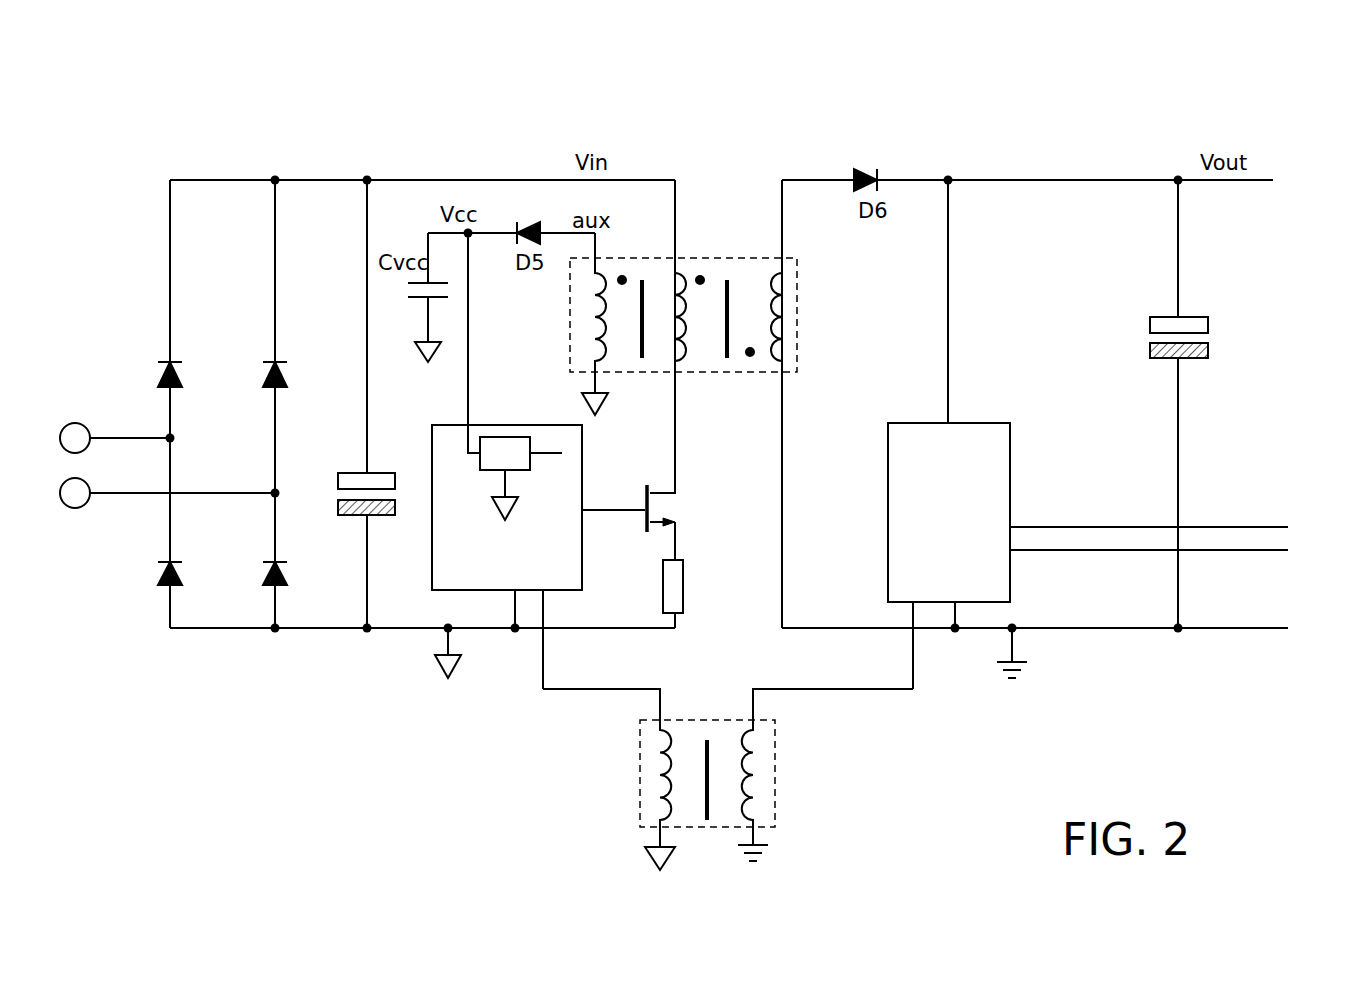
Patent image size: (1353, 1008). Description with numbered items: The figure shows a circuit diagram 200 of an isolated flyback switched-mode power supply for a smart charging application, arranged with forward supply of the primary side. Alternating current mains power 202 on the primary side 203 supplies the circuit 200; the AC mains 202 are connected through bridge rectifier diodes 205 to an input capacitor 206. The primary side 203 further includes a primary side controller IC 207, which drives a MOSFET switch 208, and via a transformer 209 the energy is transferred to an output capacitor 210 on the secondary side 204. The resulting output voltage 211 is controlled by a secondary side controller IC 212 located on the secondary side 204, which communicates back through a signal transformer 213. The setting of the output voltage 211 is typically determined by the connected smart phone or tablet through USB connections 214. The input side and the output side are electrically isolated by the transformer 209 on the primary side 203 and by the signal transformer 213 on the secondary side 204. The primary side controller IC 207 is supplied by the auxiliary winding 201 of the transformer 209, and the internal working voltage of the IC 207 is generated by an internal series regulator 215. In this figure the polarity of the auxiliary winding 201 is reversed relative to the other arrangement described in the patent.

The circuit diagram 200 is at (1310, 131).
The auxiliary winding 201 is at (686, 273).
The AC mains power 202 is at (110, 438).
The primary side 203 is at (765, 142).
The secondary side 204 is at (1272, 142).
The bridge rectifier diodes 205 is at (265, 388).
The input capacitor 206 is at (350, 473).
The primary side controller IC 207 is at (505, 425).
The MOSFET switch 208 is at (645, 524).
The transformer 209 is at (762, 258).
The output capacitor 210 is at (1160, 317).
The output voltage 211 is at (1260, 181).
The secondary side controller IC 212 is at (1010, 445).
The signal transformer 213 is at (640, 766).
The USB connections 214 is at (1250, 546).
The internal series regulator 215 is at (570, 296).